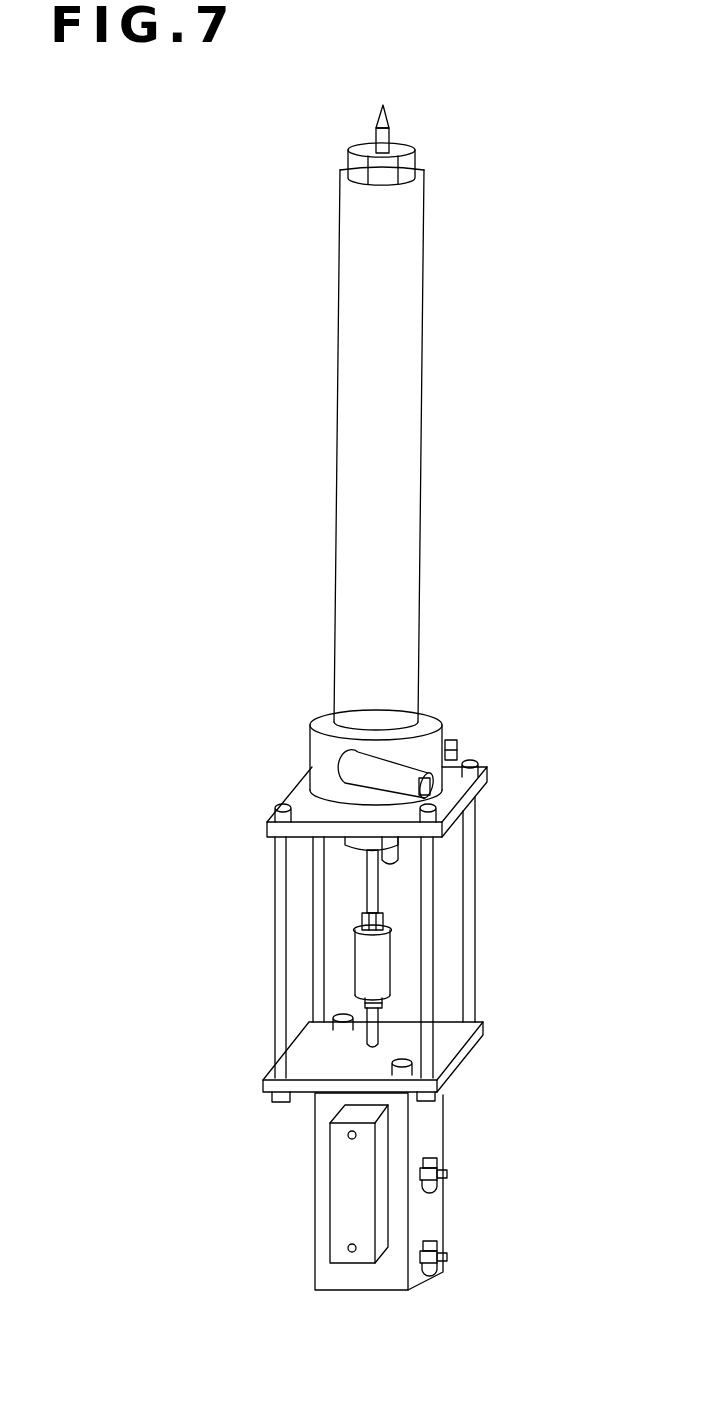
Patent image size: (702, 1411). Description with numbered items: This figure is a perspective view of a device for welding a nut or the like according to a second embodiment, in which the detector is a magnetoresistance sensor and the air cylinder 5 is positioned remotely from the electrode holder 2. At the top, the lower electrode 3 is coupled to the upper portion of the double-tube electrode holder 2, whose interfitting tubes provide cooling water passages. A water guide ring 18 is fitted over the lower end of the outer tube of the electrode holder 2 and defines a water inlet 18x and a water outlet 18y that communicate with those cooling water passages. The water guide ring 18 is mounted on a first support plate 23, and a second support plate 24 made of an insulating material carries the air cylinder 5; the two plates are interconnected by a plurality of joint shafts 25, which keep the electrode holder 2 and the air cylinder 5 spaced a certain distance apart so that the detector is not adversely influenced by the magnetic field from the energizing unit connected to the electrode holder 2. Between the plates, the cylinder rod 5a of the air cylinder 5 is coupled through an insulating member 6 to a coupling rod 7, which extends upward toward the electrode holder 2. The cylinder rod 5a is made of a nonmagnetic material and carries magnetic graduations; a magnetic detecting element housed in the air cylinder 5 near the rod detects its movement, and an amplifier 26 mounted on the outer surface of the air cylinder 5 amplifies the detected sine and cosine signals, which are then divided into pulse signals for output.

The electrode holder 2 is at (407, 410).
The lower electrode 3 is at (410, 143).
The air cylinder 5 is at (430, 1147).
The cylinder rod 5a is at (373, 1030).
The insulating member 6 is at (367, 960).
The coupling rod 7 is at (372, 880).
The water guide ring 18 is at (318, 742).
The water inlet 18x is at (430, 787).
The water outlet 18y is at (457, 750).
The first support plate 23 is at (300, 783).
The second support plate 24 is at (450, 1055).
The joint shafts 25 is at (475, 895).
The amplifier 26 is at (343, 1180).